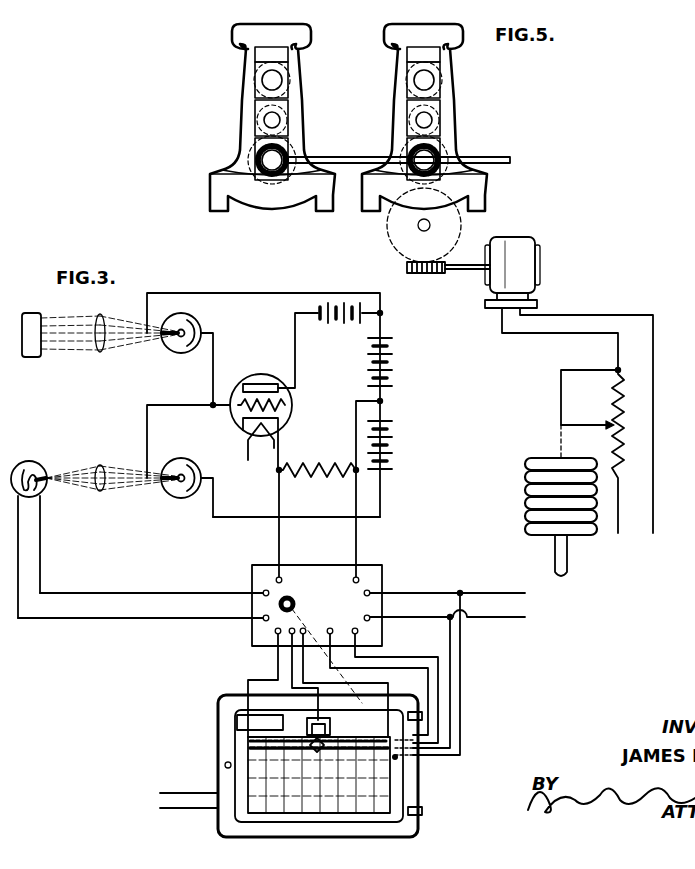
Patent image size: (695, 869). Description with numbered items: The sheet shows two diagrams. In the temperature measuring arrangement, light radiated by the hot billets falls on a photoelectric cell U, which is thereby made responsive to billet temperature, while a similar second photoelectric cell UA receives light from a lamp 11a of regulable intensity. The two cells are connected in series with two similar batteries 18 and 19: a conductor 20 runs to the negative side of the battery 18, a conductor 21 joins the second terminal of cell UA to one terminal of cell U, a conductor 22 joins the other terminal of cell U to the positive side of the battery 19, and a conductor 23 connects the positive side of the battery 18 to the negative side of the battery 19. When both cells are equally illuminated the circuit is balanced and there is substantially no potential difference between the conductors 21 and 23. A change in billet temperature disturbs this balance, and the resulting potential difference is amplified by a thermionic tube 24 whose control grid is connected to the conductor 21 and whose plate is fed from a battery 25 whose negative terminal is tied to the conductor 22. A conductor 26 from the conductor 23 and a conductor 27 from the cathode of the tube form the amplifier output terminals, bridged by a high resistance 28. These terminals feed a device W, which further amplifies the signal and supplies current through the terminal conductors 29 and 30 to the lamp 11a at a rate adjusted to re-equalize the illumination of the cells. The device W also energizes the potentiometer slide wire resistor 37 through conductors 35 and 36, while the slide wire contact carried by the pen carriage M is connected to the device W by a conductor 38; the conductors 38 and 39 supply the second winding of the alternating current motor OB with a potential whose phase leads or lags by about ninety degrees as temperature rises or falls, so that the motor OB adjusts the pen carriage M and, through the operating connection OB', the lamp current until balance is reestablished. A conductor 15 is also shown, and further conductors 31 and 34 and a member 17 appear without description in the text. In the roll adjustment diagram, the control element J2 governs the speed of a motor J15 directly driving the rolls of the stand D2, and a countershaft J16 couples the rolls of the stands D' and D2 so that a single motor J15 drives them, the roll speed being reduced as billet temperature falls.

In FIG. 5, the roll stand D' is at (279, 118).
In FIG. 5, the roll stand D2 is at (457, 118).
In FIG. 5, the countershaft J16 is at (344, 160).
In FIG. 5, the motor J15 is at (518, 248).
In FIG. 3, the control element J2 is at (525, 500).
In FIG. 3, the photoelectric cell U is at (199, 322).
In FIG. 3, the second photoelectric cell UA is at (190, 471).
In FIG. 3, the lamp 11a is at (30, 470).
In FIG. 3, the conductor 21 is at (173, 405).
In FIG. 3, the conductor 22 is at (236, 293).
In FIG. 3, the thermionic tube 24 is at (250, 382).
In FIG. 3, the battery 25 is at (340, 325).
In FIG. 3, the source of direct current 19 is at (393, 362).
In FIG. 3, the conductor 23 is at (385, 418).
In FIG. 3, the source of direct current 18 is at (394, 462).
In FIG. 3, the high resistance 28 is at (306, 468).
In FIG. 3, the conductor 20 is at (310, 517).
In FIG. 3, the conductor 27 is at (279, 547).
In FIG. 3, the conductor 26 is at (356, 547).
In FIG. 3, the device W is at (317, 634).
In FIG. 3, the terminal conductor 29 is at (158, 590).
In FIG. 3, the terminal conductor 30 is at (158, 621).
In FIG. 3, the conductor 31 is at (276, 653).
In FIG. 3, the conductor 34 is at (290, 670).
In FIG. 3, the terminal conductor 39 is at (406, 659).
In FIG. 3, the conductor 38 is at (428, 683).
In FIG. 3, the conductor 36 is at (452, 678).
In FIG. 3, the conductor 35 is at (462, 708).
In FIG. 3, the potentiometer slide wire resistor 37 is at (292, 732).
In FIG. 3, the operating connection OB' is at (338, 728).
In FIG. 3, the pen carriage M is at (307, 750).
In FIG. 3, the motor OB is at (426, 770).
In FIG. 3, the conductor 15 is at (174, 790).
In FIG. 3, the rail 17 is at (194, 812).